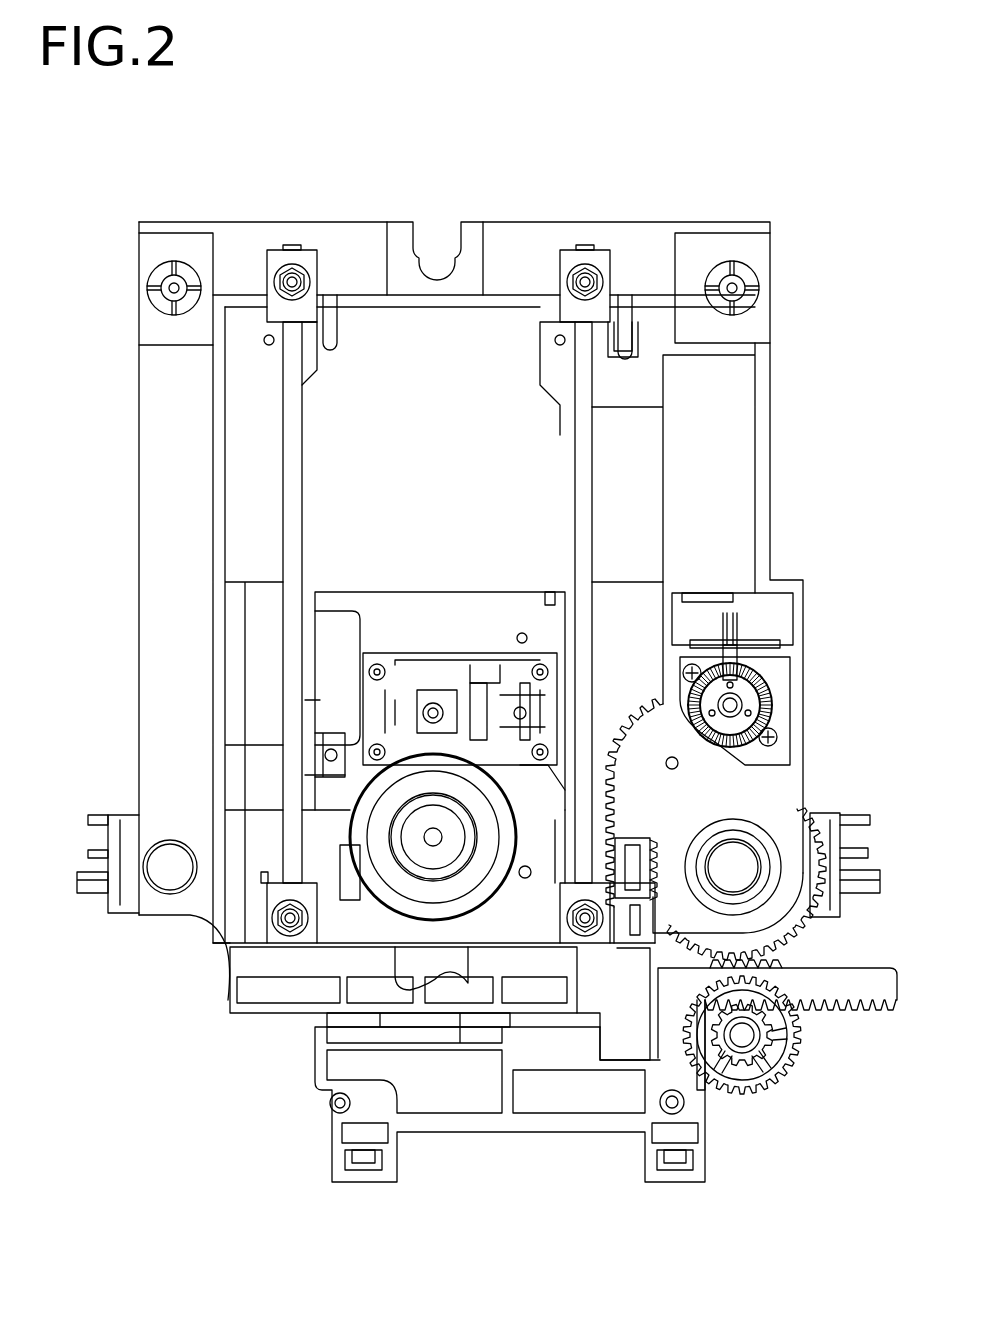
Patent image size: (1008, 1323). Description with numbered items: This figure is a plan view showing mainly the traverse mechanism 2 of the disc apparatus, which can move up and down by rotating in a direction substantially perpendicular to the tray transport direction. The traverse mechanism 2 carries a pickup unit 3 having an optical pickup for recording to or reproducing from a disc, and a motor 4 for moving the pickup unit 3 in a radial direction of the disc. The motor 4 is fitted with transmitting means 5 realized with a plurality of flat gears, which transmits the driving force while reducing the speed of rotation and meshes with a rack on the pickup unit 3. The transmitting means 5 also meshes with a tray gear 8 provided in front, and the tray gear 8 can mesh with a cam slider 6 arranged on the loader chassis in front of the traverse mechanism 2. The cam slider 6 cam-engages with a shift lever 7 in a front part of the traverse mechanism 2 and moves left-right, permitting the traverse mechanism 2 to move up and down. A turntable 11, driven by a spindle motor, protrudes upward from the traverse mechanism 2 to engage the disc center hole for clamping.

The traverse mechanism 2 is at (139, 591).
The pickup unit 3 is at (425, 625).
The motor 4 is at (745, 702).
The transmitting means 5 is at (764, 790).
The cam slider 6 is at (548, 1125).
The shift lever 7 is at (198, 949).
The tray gear 8 is at (785, 1063).
The turntable 11 is at (375, 878).